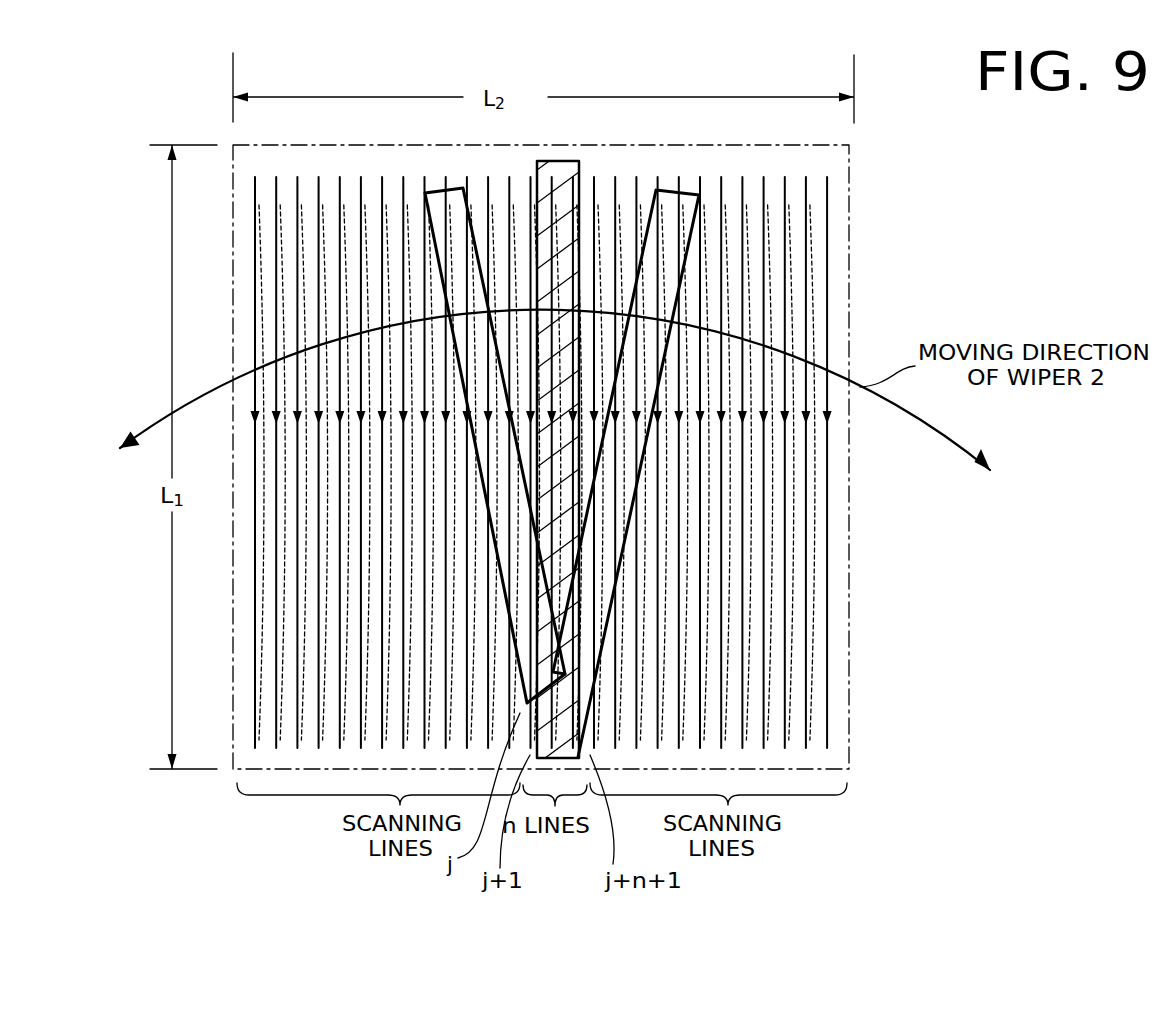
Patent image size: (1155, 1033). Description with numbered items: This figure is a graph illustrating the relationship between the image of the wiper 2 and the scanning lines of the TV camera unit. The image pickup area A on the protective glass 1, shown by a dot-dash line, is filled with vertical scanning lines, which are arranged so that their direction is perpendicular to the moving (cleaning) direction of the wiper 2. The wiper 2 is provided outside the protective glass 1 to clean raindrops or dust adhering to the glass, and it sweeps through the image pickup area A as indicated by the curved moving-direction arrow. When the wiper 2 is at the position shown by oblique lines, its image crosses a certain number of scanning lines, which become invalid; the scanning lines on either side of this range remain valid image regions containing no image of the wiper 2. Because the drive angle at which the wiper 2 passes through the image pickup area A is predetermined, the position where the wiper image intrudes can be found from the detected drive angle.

The protective glass 1 is at (654, 486).
The wiper 2 is at (672, 178).
The image pickup area A is at (847, 640).